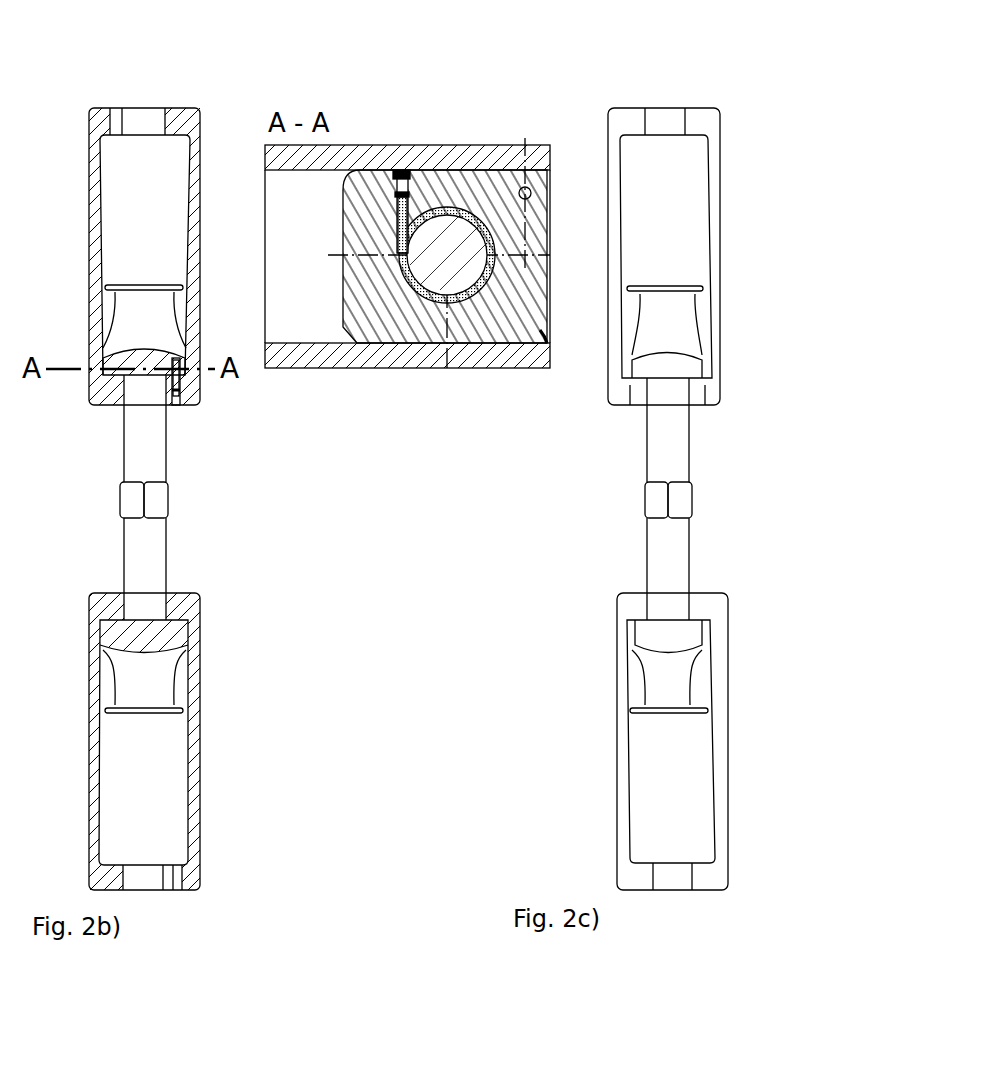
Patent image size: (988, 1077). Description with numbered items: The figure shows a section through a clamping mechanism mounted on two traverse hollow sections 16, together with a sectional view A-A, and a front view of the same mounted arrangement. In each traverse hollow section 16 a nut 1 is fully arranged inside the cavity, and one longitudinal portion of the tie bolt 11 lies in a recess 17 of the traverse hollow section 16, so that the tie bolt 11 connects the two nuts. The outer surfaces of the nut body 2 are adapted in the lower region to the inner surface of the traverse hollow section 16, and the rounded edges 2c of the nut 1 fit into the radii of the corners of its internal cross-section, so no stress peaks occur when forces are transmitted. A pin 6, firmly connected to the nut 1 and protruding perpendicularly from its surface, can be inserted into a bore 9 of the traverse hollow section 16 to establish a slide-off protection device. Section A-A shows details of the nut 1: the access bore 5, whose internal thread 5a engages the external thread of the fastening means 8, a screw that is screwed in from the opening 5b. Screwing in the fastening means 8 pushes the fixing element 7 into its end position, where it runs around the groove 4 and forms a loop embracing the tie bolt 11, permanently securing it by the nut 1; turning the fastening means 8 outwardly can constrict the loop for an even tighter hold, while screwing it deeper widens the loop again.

In FIG. 2B, the nut 1 is at (152, 313).
In FIG. 2C, the nut 1 is at (678, 313).
In FIG. 2B, the body 2 is at (543, 242).
In FIG. 2B, the rounded edges 2c is at (343, 328).
In FIG. 2C, the rounded edges 2c is at (708, 622).
In FIG. 2B, the groove 4 is at (477, 297).
In FIG. 2B, the access bore 5 is at (397, 204).
In FIG. 2B, the internal thread 5a is at (397, 226).
In FIG. 2B, the opening 5b is at (400, 173).
In FIG. 2B, the pin 6 is at (180, 398).
In FIG. 2B, the fixing element 7 is at (417, 297).
In FIG. 2B, the fastening means 8 is at (407, 190).
In FIG. 2B, the bore 9 is at (112, 108).
In FIG. 2B, the tie bolt 11 is at (153, 550).
In FIG. 2C, the tie bolt 11 is at (657, 563).
In FIG. 2B, the traverse hollow section 16 is at (200, 855).
In FIG. 2C, the traverse hollow section 16 is at (712, 115).
In FIG. 2B, the recess 17 is at (152, 118).
In FIG. 2C, the recess 17 is at (672, 870).